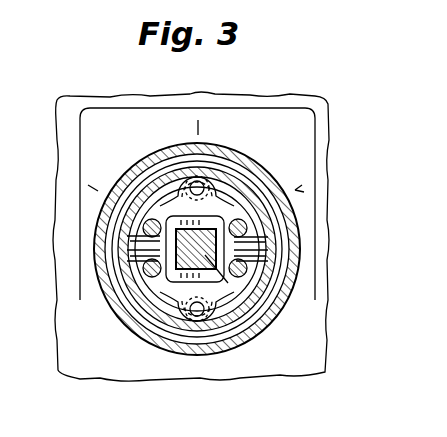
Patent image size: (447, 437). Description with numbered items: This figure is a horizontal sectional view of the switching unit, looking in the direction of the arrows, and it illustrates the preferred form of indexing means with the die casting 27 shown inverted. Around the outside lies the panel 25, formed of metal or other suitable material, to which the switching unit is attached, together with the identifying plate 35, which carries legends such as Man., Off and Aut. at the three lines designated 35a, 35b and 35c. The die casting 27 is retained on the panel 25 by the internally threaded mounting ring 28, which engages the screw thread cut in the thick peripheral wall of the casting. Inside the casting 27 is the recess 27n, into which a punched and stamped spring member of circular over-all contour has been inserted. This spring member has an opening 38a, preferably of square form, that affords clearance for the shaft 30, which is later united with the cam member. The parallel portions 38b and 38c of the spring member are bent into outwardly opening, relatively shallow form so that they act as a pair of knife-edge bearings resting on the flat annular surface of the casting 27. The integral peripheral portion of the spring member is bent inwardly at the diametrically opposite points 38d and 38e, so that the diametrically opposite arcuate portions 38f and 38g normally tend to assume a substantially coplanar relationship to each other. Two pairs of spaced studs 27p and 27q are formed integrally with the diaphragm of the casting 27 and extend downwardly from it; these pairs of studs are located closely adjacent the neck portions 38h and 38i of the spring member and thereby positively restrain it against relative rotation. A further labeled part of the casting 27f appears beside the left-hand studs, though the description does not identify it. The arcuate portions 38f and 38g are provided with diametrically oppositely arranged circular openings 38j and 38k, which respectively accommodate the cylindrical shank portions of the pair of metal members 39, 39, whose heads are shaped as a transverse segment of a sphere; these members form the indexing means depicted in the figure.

The panel 25 is at (91, 353).
The identifying plate 35 is at (98, 117).
The indicia line 35a is at (93, 189).
The indicia line 35b is at (198, 128).
The indicia line 35c is at (295, 190).
The shaft 30 is at (286, 300).
The metal member 39 is at (180, 163).
The opening 38a is at (271, 318).
The parallel portion 38c is at (244, 337).
The die casting 27 is at (138, 308).
The parallel portion 38b is at (205, 218).
The circular opening 38j is at (200, 183).
The recess 27n is at (217, 170).
The arcuate portion 38f is at (156, 185).
The mounting ring 28 is at (265, 183).
The arcuate portion 38g is at (176, 314).
The circular opening 38k is at (191, 315).
The studs 27p is at (145, 219).
The lower left bolt hole 27f is at (145, 273).
The studs 27q is at (250, 224).
The inwardly bent peripheral portion 38d is at (145, 237).
The neck portion 38h is at (145, 257).
The neck portion 38i is at (258, 234).
The inwardly bent peripheral portion 38e is at (262, 251).